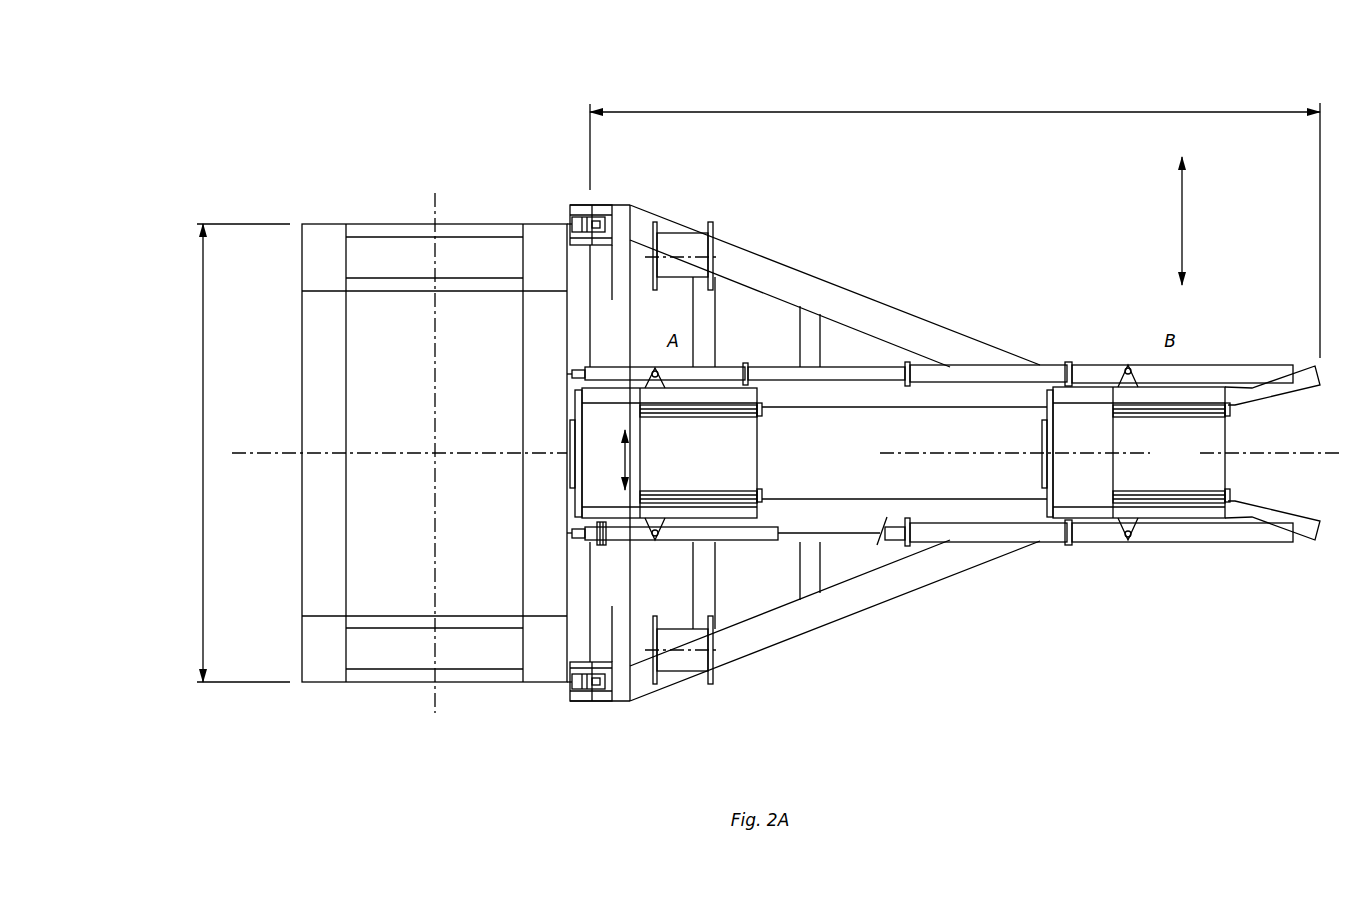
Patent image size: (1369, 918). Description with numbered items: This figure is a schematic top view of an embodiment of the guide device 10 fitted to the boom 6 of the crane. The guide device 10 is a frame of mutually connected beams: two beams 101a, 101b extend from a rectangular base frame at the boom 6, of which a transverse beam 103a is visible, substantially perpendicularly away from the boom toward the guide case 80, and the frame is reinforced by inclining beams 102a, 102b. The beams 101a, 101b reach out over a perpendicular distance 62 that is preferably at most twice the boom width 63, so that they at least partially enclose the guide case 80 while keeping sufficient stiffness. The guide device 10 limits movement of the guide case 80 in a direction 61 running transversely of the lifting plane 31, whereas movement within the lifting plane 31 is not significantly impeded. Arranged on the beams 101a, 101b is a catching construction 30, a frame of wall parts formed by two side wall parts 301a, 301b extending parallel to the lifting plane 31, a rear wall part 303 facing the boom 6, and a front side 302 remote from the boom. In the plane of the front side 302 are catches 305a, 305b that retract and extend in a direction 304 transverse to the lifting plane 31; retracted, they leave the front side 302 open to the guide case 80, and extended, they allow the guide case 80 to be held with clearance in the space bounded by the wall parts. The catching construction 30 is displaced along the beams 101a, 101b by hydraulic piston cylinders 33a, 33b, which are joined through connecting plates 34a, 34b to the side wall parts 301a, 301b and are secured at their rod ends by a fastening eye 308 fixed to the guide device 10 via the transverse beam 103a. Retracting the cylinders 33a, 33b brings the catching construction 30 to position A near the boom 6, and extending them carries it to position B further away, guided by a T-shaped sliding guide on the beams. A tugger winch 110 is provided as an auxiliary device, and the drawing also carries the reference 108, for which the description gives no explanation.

The boom 6 is at (308, 208).
The guide device 10 is at (995, 235).
The catching construction 30 is at (736, 600).
The lifting plane 31 is at (258, 452).
The hydraulic piston cylinder 33a is at (678, 540).
The hydraulic piston cylinder 33b is at (862, 372).
The connecting plate 34a is at (640, 543).
The connecting plate 34b is at (650, 368).
The direction 61 is at (1182, 225).
The perpendicular distance 62 is at (917, 112).
The boom width 63 is at (200, 448).
The guide case 80 is at (686, 466).
The beam 101a is at (995, 512).
The beam 101b is at (995, 400).
The inclining beam 102a is at (850, 598).
The inclining beam 102b is at (795, 288).
The transverse beam 103a is at (580, 272).
The pivot connection 108 is at (570, 224).
The tugger winch 110 is at (683, 248).
The side wall part 301a is at (728, 502).
The side wall part 301b is at (727, 405).
The front side 302 is at (758, 452).
The rear wall part 303 is at (612, 423).
The direction 304 is at (625, 455).
The catch 305a is at (762, 492).
The catch 305b is at (762, 412).
The fastening eye 308 is at (580, 373).